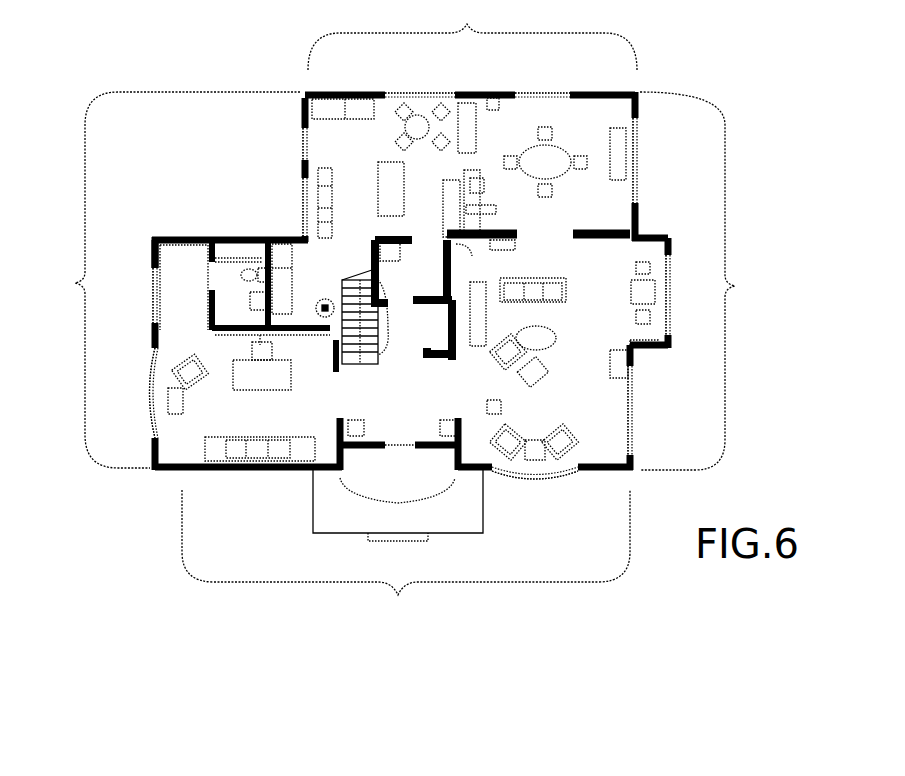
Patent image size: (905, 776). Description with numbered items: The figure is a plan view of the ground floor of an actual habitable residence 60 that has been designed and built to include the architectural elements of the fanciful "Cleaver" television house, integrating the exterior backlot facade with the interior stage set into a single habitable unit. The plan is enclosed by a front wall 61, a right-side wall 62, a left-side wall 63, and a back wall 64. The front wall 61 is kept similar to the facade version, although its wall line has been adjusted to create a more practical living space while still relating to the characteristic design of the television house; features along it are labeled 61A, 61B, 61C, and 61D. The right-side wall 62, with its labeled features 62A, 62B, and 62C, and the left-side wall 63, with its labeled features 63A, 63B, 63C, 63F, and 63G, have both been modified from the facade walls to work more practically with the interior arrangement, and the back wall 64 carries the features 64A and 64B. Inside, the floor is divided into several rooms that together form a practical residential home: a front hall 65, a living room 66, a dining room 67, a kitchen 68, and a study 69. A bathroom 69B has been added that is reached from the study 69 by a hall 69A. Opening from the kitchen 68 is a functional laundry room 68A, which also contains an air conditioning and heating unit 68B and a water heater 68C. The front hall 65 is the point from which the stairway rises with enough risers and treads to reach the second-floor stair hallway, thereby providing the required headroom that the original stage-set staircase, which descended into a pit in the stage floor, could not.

The residence 60 is at (479, 285).
The front wall 61 is at (406, 560).
The front door 61A is at (400, 449).
The front porch 61B is at (398, 505).
The bay window 61C is at (536, 486).
The front window 61D is at (261, 474).
The right-side wall 62 is at (707, 281).
The right side window 62A is at (633, 408).
The right side window 62B is at (670, 292).
The right side window 62C is at (637, 118).
The left-side wall 63 is at (162, 280).
The left bay window 63A is at (147, 389).
The left side window 63B is at (155, 301).
The left side door 63C is at (153, 263).
The kitchen window 63F is at (303, 212).
The kitchen window 63G is at (303, 147).
The back wall 64 is at (472, 35).
The rear window 64A is at (417, 90).
The rear window 64B is at (544, 90).
The front hall 65 is at (410, 338).
The living room 66 is at (564, 361).
The dining room 67 is at (546, 156).
The kitchen 68 is at (471, 174).
The laundry room 68A is at (367, 307).
The air conditioning and heating unit 68B is at (280, 298).
The water heater 68C is at (325, 316).
The study 69 is at (241, 401).
The hall 69A is at (186, 285).
The bathroom 69B is at (239, 284).